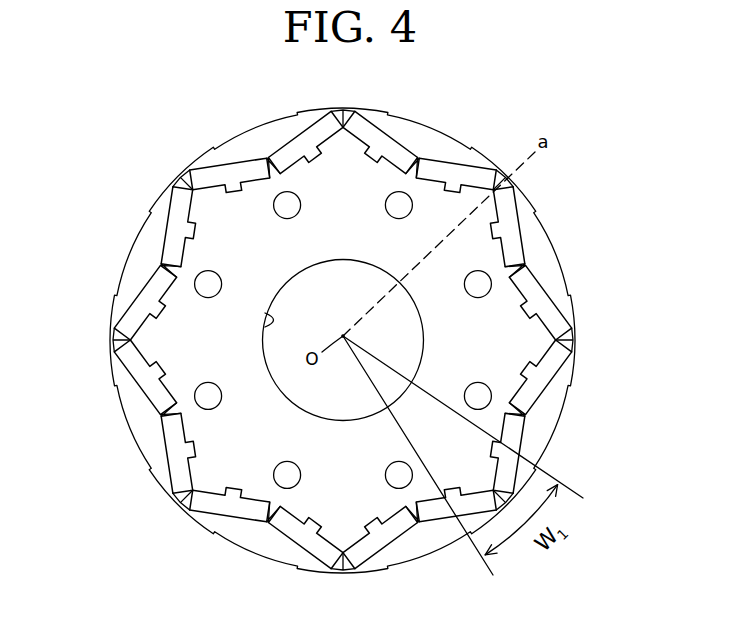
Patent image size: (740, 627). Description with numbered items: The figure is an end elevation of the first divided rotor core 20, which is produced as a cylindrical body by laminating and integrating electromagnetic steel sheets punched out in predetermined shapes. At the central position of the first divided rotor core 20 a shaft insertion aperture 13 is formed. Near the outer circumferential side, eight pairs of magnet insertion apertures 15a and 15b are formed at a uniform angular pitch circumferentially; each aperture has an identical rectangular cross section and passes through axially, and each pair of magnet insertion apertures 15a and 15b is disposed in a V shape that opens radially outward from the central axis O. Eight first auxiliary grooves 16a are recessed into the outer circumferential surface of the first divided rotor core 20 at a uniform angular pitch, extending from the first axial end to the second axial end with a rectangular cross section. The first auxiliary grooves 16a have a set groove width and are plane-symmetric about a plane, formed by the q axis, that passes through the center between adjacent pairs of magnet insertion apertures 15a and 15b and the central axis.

The first divided rotor core 20 is at (121, 86).
The shaft insertion aperture 13 is at (277, 322).
The magnet insertion aperture 15a is at (173, 453).
The magnet insertion aperture 15b is at (138, 377).
The first auxiliary groove 16a is at (528, 193).